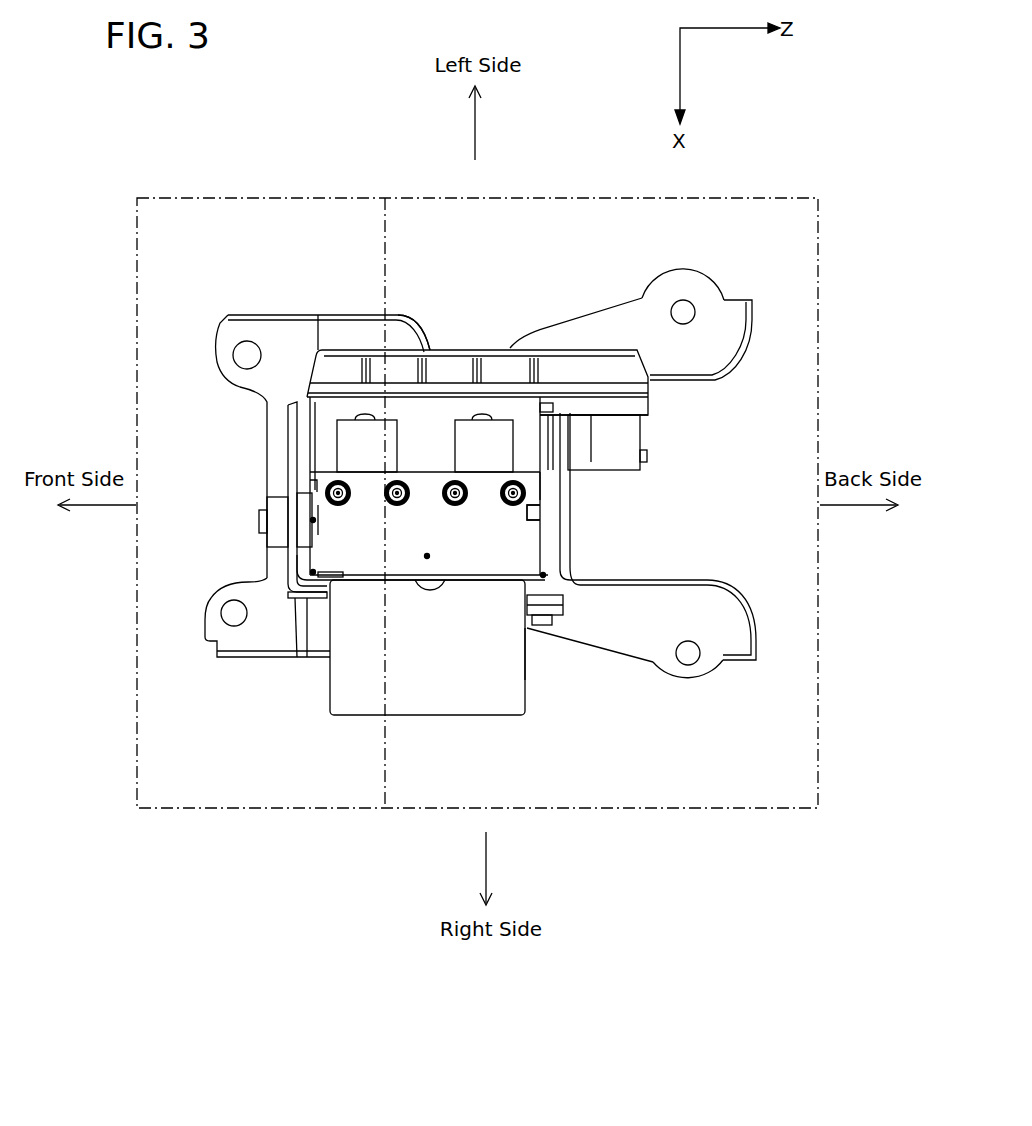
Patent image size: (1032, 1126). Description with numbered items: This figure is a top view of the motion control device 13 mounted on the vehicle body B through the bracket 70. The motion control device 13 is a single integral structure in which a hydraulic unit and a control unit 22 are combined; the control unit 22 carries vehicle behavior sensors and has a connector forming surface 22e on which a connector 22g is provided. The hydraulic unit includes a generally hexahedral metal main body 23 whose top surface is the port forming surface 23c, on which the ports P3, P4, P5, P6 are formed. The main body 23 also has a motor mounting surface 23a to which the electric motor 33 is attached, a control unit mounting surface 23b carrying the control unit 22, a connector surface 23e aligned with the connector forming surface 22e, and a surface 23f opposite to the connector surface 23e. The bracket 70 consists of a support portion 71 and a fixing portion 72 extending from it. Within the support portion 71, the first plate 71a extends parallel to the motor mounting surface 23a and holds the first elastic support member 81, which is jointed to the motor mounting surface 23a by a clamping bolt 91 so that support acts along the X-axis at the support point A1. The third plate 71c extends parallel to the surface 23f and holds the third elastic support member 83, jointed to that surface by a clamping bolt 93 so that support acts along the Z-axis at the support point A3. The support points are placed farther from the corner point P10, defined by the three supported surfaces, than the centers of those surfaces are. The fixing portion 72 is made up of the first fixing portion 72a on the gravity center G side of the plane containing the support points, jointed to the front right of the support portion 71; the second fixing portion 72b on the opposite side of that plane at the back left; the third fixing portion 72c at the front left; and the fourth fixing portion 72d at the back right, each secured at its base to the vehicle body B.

The motion control device 13 is at (668, 412).
The control unit 22 is at (470, 345).
The connector forming surface 22e is at (540, 452).
The connector 22g is at (630, 444).
The main body 23 is at (545, 528).
The motor mounting surface 23a is at (390, 580).
The control unit mounting surface 23b is at (413, 468).
The port forming surface 23c is at (528, 510).
The connector surface 23e is at (542, 487).
The surface opposite to the connector surface 23f is at (310, 487).
The electric motor 33 is at (440, 702).
The bracket 70 is at (323, 311).
The support portion 71 is at (282, 432).
The first plate 71a is at (313, 600).
The third plate 71c is at (297, 500).
The fixing portion 72 is at (418, 333).
The first fixing portion 72a is at (236, 652).
The second fixing portion 72b is at (692, 290).
The third fixing portion 72c is at (246, 334).
The fourth fixing portion 72d is at (694, 678).
The first elastic support member 81 is at (562, 615).
The third elastic support member 83 is at (278, 491).
The clamping bolt 91 is at (540, 630).
The clamping bolt 93 is at (256, 525).
The port P3 is at (345, 506).
The port P4 is at (402, 506).
The port P5 is at (458, 506).
The port P6 is at (512, 506).
The corner point P10 is at (310, 571).
The support point A1 is at (548, 574).
The support point A3 is at (316, 522).
The gravity center G is at (430, 557).
The vehicle body B is at (505, 198).